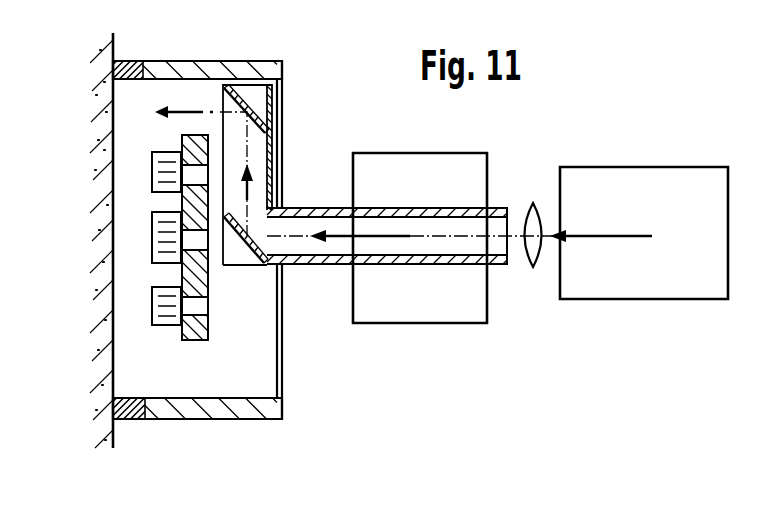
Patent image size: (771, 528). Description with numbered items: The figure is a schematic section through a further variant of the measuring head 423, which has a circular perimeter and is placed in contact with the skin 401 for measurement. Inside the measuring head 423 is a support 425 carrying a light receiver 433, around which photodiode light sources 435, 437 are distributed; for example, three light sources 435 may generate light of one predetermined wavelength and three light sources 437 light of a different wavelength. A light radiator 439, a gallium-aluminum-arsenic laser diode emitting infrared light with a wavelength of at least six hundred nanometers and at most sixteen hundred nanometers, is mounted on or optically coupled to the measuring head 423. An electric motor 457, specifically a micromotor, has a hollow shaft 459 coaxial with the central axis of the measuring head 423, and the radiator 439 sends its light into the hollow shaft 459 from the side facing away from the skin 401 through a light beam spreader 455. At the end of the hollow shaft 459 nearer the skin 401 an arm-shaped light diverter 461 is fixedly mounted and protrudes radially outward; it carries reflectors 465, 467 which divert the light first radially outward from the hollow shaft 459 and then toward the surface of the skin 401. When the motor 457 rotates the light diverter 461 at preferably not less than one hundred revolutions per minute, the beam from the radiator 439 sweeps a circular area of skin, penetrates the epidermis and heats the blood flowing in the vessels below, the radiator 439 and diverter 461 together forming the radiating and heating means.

The skin 401 is at (116, 437).
The measuring head 423 is at (218, 422).
The support 425 is at (273, 422).
The light receiver 433 is at (152, 245).
The light sources 435 is at (175, 330).
The light sources 437 is at (150, 170).
The light radiator 439 is at (602, 300).
The light beam spreader 455 is at (533, 268).
The electric motor 457 is at (398, 323).
The hollow shaft 459 is at (322, 266).
The light diverter 461 is at (272, 152).
The reflector 465 is at (243, 245).
The reflector 467 is at (250, 93).